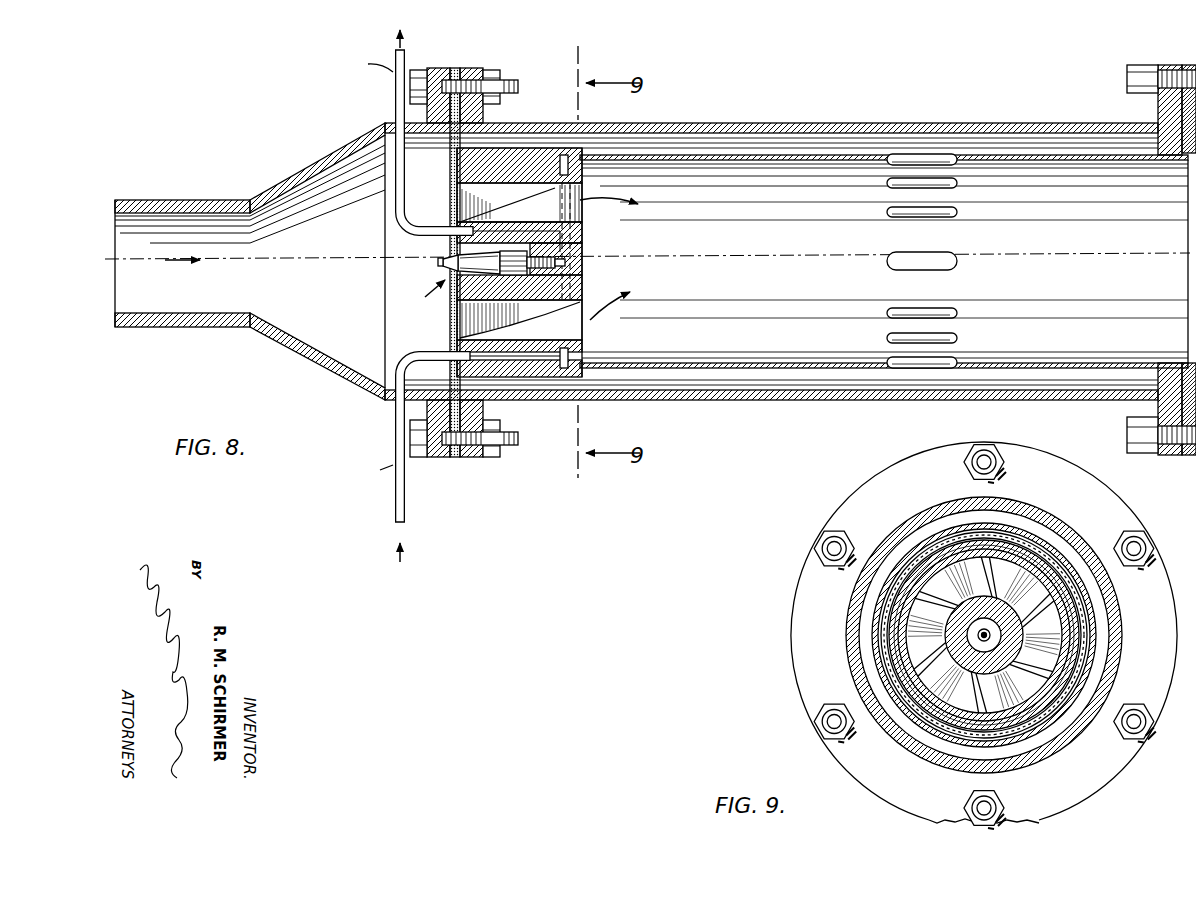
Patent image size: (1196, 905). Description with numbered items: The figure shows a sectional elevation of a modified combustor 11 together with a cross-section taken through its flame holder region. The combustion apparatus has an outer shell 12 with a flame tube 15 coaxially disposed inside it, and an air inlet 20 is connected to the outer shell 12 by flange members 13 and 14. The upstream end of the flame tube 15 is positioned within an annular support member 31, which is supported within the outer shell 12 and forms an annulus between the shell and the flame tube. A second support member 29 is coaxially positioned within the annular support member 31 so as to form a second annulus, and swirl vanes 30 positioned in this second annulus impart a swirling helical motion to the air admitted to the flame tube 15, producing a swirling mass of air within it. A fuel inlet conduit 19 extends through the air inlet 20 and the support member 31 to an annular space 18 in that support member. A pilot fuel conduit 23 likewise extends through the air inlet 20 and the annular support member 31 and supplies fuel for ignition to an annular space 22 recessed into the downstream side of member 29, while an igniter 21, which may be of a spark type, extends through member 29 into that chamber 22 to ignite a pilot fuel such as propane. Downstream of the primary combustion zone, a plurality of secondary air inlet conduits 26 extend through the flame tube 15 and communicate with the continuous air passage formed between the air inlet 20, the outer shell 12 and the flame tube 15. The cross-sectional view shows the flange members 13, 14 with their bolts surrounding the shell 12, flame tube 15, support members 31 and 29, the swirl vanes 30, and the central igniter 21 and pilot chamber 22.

In FIG. 8, the combustor 11 is at (748, 416).
In FIG. 8, the outer shell 12 is at (748, 125).
In FIG. 9, the outer shell 12 is at (1112, 590).
In FIG. 8, the flange member 13 is at (442, 458).
In FIG. 8, the flange member 14 is at (472, 458).
In FIG. 9, the flange member 14 is at (808, 590).
In FIG. 8, the flame tube 15 is at (776, 363).
In FIG. 9, the flame tube 15 is at (876, 635).
In FIG. 8, the annular space 18 is at (572, 356).
In FIG. 9, the annular space 18 is at (1078, 613).
In FIG. 8, the fuel inlet conduit 19 is at (393, 430).
In FIG. 8, the air inlet 20 is at (190, 330).
In FIG. 8, the igniter 21 is at (447, 259).
In FIG. 9, the igniter 21 is at (1003, 635).
In FIG. 8, the annular space 22 is at (577, 268).
In FIG. 9, the annular space 22 is at (976, 635).
In FIG. 8, the pilot fuel conduit 23 is at (393, 97).
In FIG. 8, the secondary air inlet conduits 26 is at (940, 218).
In FIG. 8, the second support member 29 is at (572, 240).
In FIG. 9, the second support member 29 is at (1083, 641).
In FIG. 8, the swirl vanes 30 is at (468, 200).
In FIG. 9, the swirl vanes 30 is at (960, 600).
In FIG. 8, the annular support member 31 is at (540, 382).
In FIG. 9, the annular support member 31 is at (870, 617).